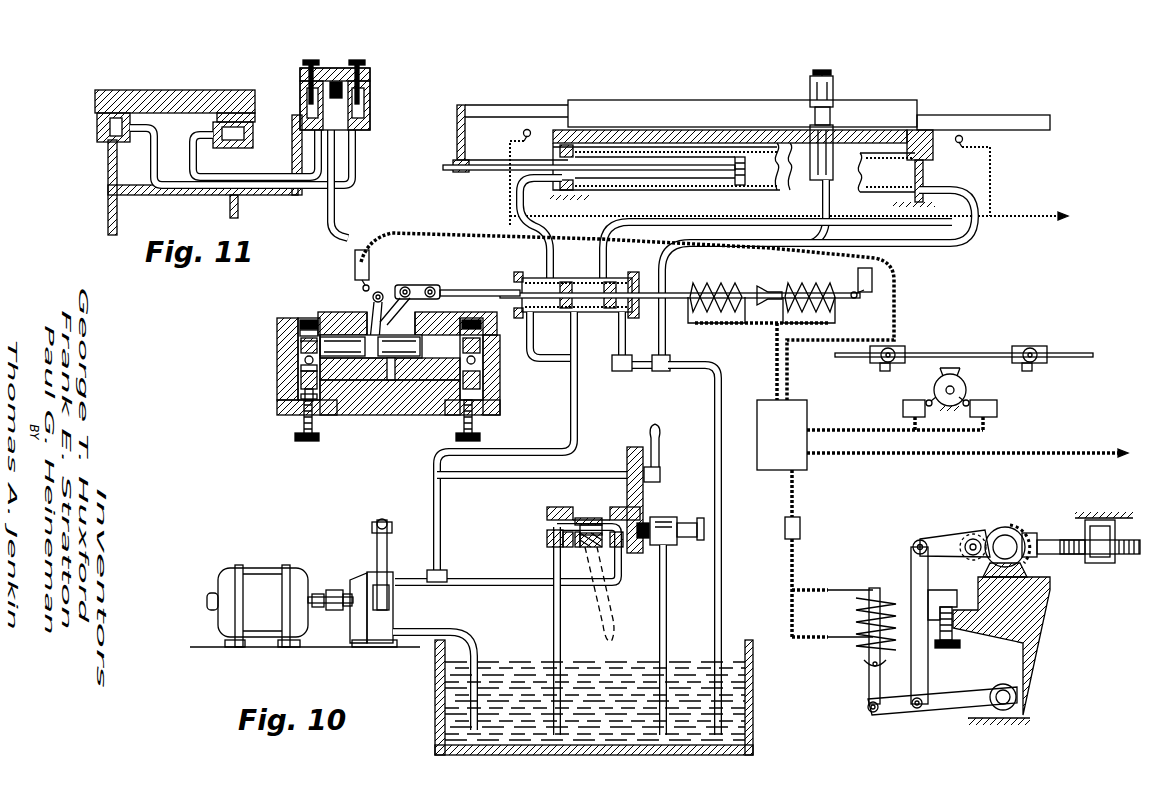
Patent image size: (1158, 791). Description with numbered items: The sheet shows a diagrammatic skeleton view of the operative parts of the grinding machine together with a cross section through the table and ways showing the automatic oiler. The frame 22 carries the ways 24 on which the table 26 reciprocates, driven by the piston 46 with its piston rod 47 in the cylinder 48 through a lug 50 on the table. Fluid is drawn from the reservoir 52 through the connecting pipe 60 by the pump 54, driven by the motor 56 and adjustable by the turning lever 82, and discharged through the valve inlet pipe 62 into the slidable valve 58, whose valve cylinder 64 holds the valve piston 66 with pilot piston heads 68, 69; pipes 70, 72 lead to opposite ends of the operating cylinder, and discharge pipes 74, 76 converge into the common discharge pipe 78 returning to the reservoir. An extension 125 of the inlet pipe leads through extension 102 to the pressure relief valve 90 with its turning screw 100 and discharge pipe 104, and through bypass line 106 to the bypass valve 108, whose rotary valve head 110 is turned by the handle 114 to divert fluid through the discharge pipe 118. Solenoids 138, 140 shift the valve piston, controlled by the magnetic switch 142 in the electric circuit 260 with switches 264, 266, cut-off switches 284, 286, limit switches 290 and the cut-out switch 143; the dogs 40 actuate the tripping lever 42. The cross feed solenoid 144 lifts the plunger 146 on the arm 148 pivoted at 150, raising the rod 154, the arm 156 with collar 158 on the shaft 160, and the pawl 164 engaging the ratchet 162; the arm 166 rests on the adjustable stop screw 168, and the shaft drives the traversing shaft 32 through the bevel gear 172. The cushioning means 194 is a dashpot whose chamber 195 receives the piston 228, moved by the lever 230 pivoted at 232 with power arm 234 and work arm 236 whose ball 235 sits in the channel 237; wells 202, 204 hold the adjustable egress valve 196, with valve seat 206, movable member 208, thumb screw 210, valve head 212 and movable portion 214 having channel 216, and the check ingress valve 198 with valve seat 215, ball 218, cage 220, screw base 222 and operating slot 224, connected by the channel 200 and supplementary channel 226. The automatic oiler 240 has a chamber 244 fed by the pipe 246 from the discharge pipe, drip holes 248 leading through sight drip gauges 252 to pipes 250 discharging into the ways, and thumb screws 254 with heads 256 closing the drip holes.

In FIG. 11, the frame 22 is at (108, 181).
In FIG. 11, the ways 24 is at (100, 130).
In FIG. 10, the table 26 is at (662, 100).
In FIG. 10, the shaft 32 is at (1062, 556).
In FIG. 10, the dogs 40 is at (888, 364).
In FIG. 10, the tripping lever 42 is at (980, 388).
In FIG. 10, the piston 46 is at (757, 163).
In FIG. 10, the piston rod 47 is at (622, 165).
In FIG. 10, the cylinder 48 is at (712, 147).
In FIG. 10, the lug 50 is at (470, 140).
In FIG. 10, the reservoir 52 is at (435, 690).
In FIG. 10, the pump 54 is at (357, 572).
In FIG. 10, the motor 56 is at (262, 568).
In FIG. 10, the slidable valve 58 is at (636, 270).
In FIG. 10, the connecting pipe 60 is at (452, 628).
In FIG. 10, the valve inlet pipe 62 is at (442, 522).
In FIG. 10, the valve cylinder 64 is at (532, 280).
In FIG. 10, the valve piston 66 is at (592, 302).
In FIG. 10, the pilot piston head 68 is at (573, 283).
In FIG. 10, the pilot piston head 69 is at (615, 283).
In FIG. 10, the pipe 70 is at (548, 237).
In FIG. 10, the pipe 72 is at (952, 190).
In FIG. 10, the discharge pipe 74 is at (522, 362).
In FIG. 10, the discharge pipe 76 is at (626, 352).
In FIG. 10, the common discharge pipe 78 is at (724, 380).
In FIG. 10, the turning lever 82 is at (663, 440).
In FIG. 10, the pressure relief valve 90 is at (676, 546).
In FIG. 10, the adjustable turning screw 100 is at (697, 518).
In FIG. 10, the extension 102 is at (624, 506).
In FIG. 10, the discharge pipe 104 is at (669, 598).
In FIG. 10, the bypass line 106 is at (592, 516).
In FIG. 10, the bypass valve 108 is at (585, 548).
In FIG. 10, the rotary valve head 110 is at (578, 516).
In FIG. 10, the handle 114 is at (614, 620).
In FIG. 10, the discharge pipe 118 is at (551, 630).
In FIG. 10, the extension 125 is at (503, 578).
In FIG. 10, the solenoid 138 is at (805, 284).
In FIG. 10, the solenoid 140 is at (728, 284).
In FIG. 10, the magnetic switch 142 is at (800, 400).
In FIG. 10, the cut-out switch 143 is at (805, 526).
In FIG. 10, the cross feed solenoid 144 is at (886, 590).
In FIG. 10, the plunger 146 is at (862, 656).
In FIG. 10, the arm 148 is at (890, 712).
In FIG. 10, the pivot 150 is at (1003, 684).
In FIG. 10, the rod 154 is at (929, 652).
In FIG. 10, the arm 156 is at (930, 540).
In FIG. 10, the collar 158 is at (1020, 527).
In FIG. 10, the shaft 160 is at (1003, 540).
In FIG. 10, the ratchet 162 is at (1012, 522).
In FIG. 10, the pawl 164 is at (970, 535).
In FIG. 10, the arm 166 is at (940, 590).
In FIG. 10, the adjustable stop screw 168 is at (955, 632).
In FIG. 10, the bevel gear 172 is at (1082, 522).
In FIG. 10, the cushioning means 194 is at (446, 250).
In FIG. 10, the chamber 195 is at (462, 318).
In FIG. 10, the adjustable egress valve 196 is at (278, 420).
In FIG. 10, the check ingress valve 198 is at (268, 337).
In FIG. 10, the channel 200 is at (370, 386).
In FIG. 10, the well 202 is at (292, 395).
In FIG. 10, the well 204 is at (490, 322).
In FIG. 10, the frusto-conical valve seat 206 is at (292, 372).
In FIG. 10, the movable member 208 is at (292, 404).
In FIG. 10, the thumb screw 210 is at (306, 442).
In FIG. 10, the frusto-conical valve head 212 is at (292, 384).
In FIG. 10, the movable portion 214 is at (318, 420).
In FIG. 10, the valve seat 215 is at (292, 362).
In FIG. 10, the channel 216 is at (340, 402).
In FIG. 10, the ball 218 is at (292, 350).
In FIG. 10, the cage 220 is at (296, 330).
In FIG. 10, the screw base 222 is at (300, 326).
In FIG. 10, the operating slot 224 is at (310, 320).
In FIG. 10, the supplementary channel 226 is at (400, 386).
In FIG. 10, the piston 228 is at (440, 310).
In FIG. 10, the lever 230 is at (423, 302).
In FIG. 10, the pivot 232 is at (398, 286).
In FIG. 10, the power arm 234 is at (425, 284).
In FIG. 10, the ball 235 is at (365, 345).
In FIG. 10, the work arm 236 is at (380, 291).
In FIG. 10, the channel 237 is at (370, 320).
In FIG. 11, the automatic oiler 240 is at (298, 70).
In FIG. 10, the automatic oiler 240 is at (836, 100).
In FIG. 11, the chamber 244 is at (345, 80).
In FIG. 11, the pipe 246 is at (337, 204).
In FIG. 10, the pipe 246 is at (812, 243).
In FIG. 11, the drip holes 248 is at (303, 95).
In FIG. 11, the pipes 250 is at (352, 145).
In FIG. 10, the pipes 250 is at (822, 190).
In FIG. 11, the sight drip gauges 252 is at (300, 110).
In FIG. 11, the thumb screws 254 is at (318, 72).
In FIG. 11, the heads 256 is at (311, 60).
In FIG. 10, the electric circuit 260 is at (832, 422).
In FIG. 10, the switch 264 is at (995, 417).
In FIG. 10, the switch 266 is at (903, 408).
In FIG. 10, the switch 284 is at (874, 292).
In FIG. 10, the switch 286 is at (370, 262).
In FIG. 10, the limit switches 290 is at (533, 129).